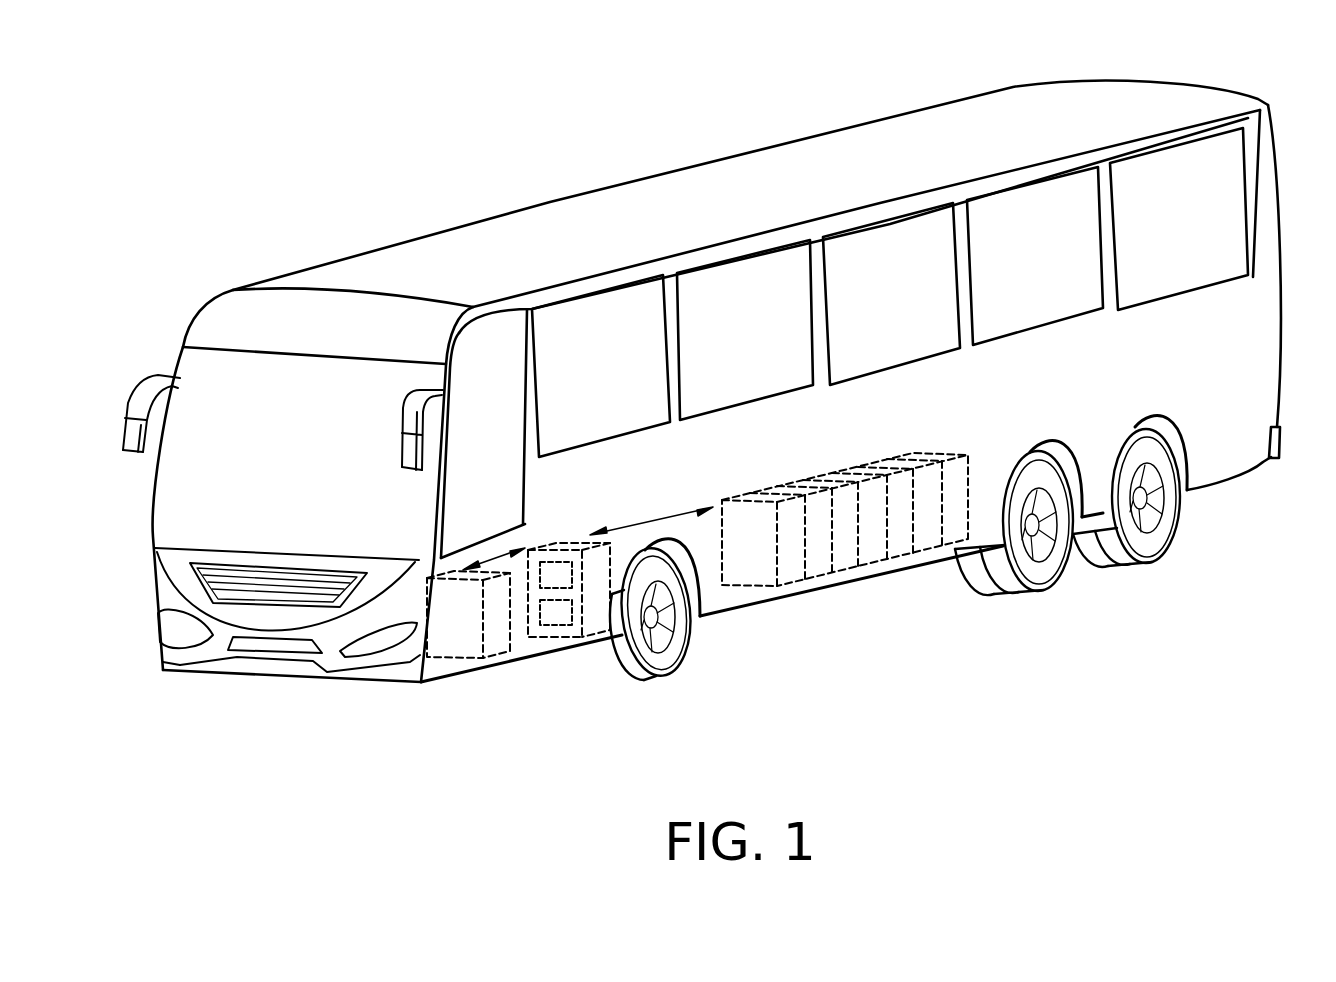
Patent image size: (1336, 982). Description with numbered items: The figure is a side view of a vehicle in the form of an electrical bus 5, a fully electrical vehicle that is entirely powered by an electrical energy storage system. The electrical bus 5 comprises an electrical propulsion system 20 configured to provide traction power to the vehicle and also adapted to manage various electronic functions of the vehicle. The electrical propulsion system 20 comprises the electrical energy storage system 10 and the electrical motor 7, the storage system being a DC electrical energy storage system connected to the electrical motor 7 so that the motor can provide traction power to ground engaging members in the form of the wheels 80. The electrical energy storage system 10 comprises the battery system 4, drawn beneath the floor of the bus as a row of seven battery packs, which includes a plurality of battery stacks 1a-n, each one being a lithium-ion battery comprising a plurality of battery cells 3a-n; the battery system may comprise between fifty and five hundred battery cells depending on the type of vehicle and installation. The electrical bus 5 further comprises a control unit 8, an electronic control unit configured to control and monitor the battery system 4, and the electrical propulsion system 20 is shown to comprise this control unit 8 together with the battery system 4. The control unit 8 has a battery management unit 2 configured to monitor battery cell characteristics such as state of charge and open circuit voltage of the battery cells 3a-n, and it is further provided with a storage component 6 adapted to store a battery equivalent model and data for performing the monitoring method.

The electrical bus 5 is at (492, 147).
The battery stacks 1a-n is at (730, 540).
The battery cells 3a-n is at (757, 540).
The battery system 4 is at (733, 653).
The electrical energy storage system 10 is at (797, 383).
The electrical motor 7 is at (453, 622).
The battery management unit 2 is at (548, 573).
The storage component 6 is at (556, 615).
The control unit 8 is at (600, 622).
The wheels 80 is at (665, 662).
The electrical propulsion system 20 is at (577, 755).